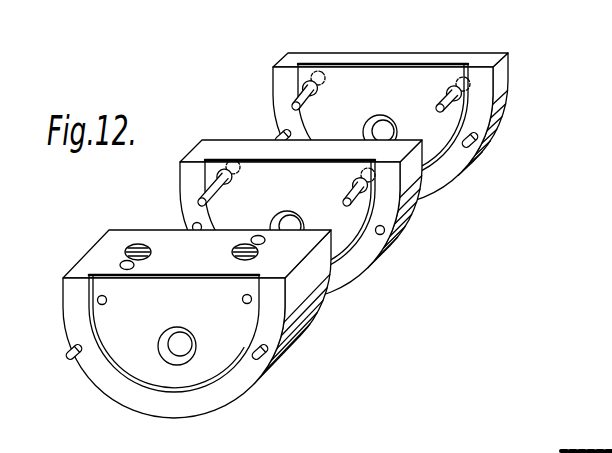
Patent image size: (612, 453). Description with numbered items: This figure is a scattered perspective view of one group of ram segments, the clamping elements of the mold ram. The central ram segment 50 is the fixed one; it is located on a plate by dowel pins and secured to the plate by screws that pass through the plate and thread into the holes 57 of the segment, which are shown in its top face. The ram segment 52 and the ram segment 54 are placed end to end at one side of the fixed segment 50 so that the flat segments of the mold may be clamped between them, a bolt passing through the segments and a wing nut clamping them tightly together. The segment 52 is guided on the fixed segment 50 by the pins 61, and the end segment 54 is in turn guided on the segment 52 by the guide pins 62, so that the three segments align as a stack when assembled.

The ram segment 50 is at (191, 323).
The ram segment 52 is at (301, 205).
The ram segment 54 is at (369, 113).
The holes 57 is at (236, 251).
The pins 61 is at (206, 198).
The guide pins 62 is at (302, 97).